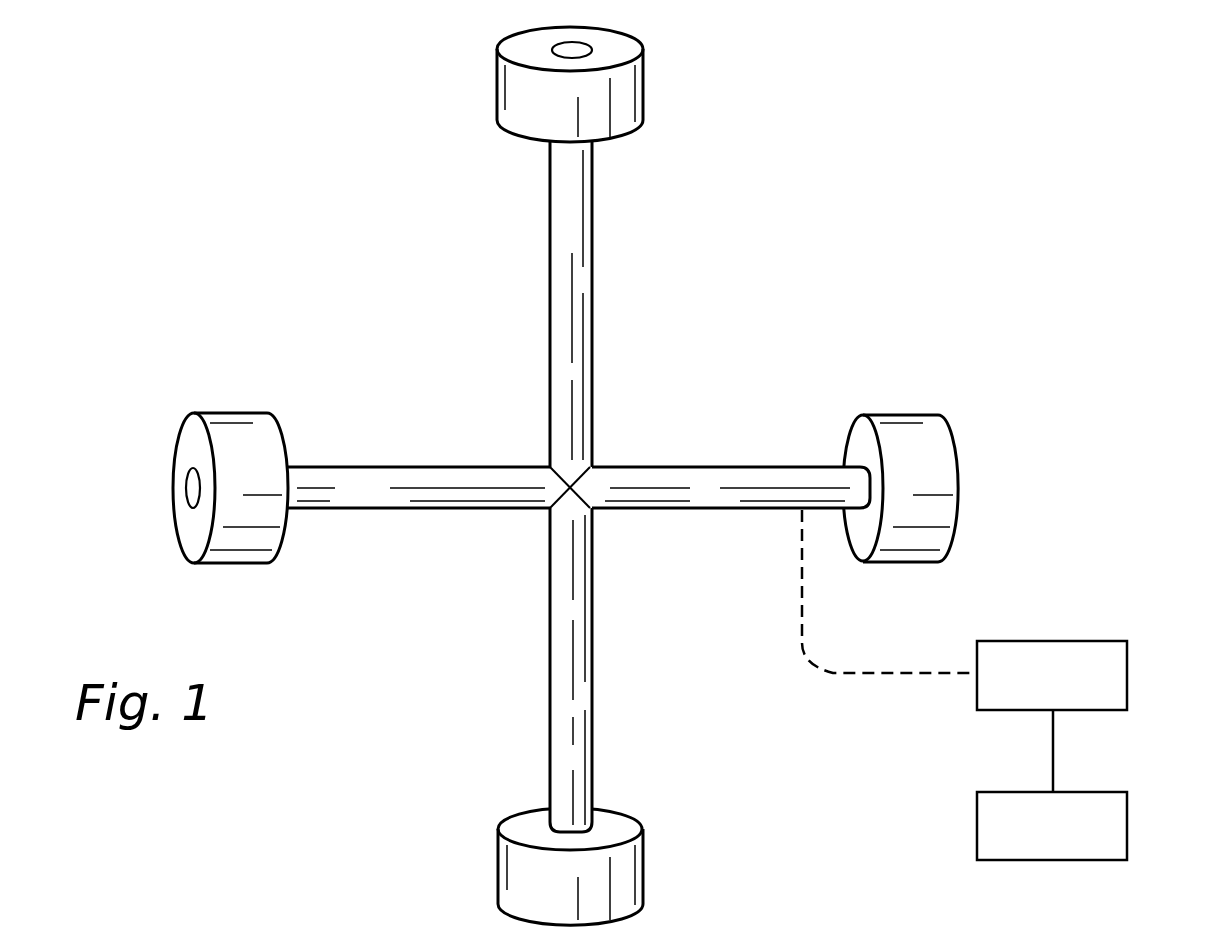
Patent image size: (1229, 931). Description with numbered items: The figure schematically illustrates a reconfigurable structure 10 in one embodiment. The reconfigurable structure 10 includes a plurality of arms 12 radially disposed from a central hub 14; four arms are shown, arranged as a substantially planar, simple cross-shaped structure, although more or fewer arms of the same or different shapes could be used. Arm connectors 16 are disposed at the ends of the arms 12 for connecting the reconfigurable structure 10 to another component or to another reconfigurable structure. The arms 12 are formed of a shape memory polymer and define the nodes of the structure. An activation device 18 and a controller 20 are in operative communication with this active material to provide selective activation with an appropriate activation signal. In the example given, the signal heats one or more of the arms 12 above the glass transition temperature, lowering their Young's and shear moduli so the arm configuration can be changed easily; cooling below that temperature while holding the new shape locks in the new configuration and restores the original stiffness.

The reconfigurable structure 10 is at (308, 196).
The arm 12 is at (562, 331).
The central hub 14 is at (573, 488).
The arm connector 16 is at (880, 415).
The activation device 18 is at (1127, 672).
The controller 20 is at (1127, 823).